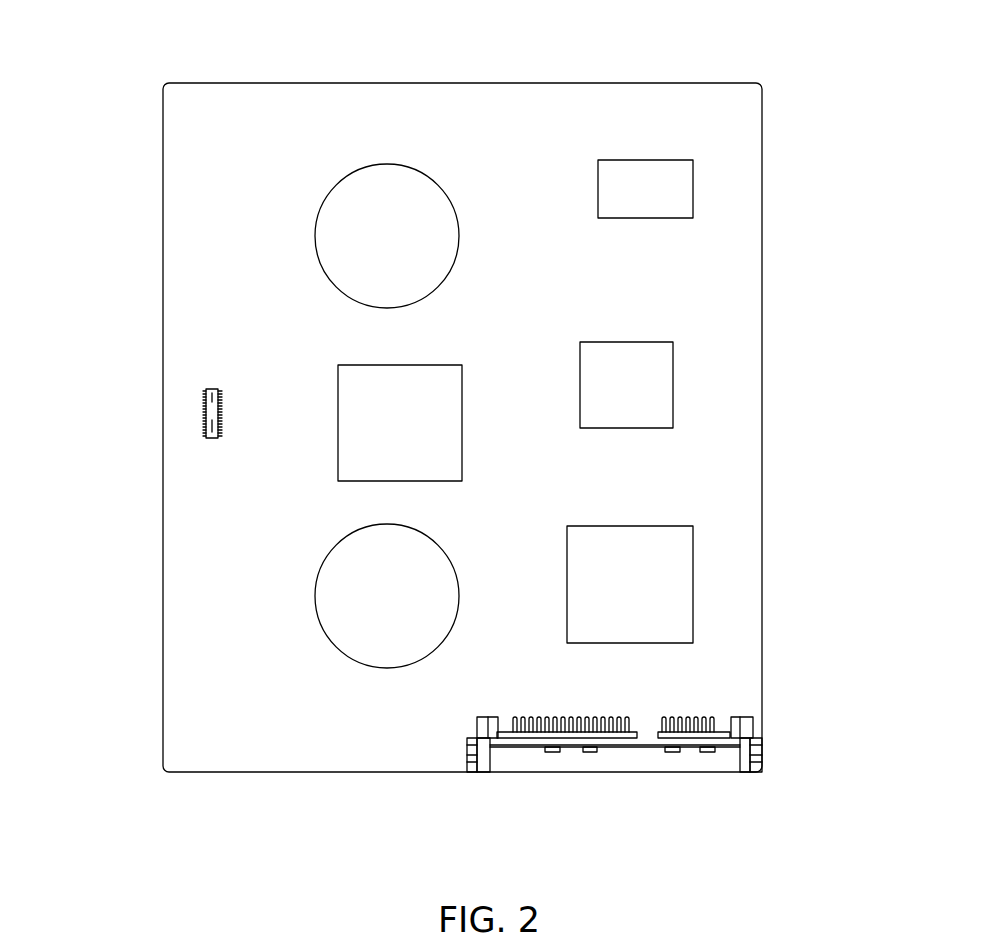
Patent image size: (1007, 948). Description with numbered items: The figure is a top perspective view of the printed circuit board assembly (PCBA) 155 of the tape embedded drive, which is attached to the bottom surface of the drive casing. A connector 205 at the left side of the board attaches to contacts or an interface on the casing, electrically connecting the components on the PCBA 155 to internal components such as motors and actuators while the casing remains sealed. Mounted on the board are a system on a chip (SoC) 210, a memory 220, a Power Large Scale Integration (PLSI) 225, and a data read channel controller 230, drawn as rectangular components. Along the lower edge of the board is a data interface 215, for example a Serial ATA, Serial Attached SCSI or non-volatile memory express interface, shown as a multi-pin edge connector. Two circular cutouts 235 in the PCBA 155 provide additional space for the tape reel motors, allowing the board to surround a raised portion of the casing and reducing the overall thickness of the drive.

The printed circuit board assembly 155 is at (728, 107).
The connector 205 is at (202, 400).
The system on a chip 210 is at (665, 584).
The data interface 215 is at (628, 772).
The memory 220 is at (673, 184).
The Power Large Scale Integration 225 is at (658, 372).
The data read channel controller 230 is at (337, 377).
The cutout 235 is at (337, 228).